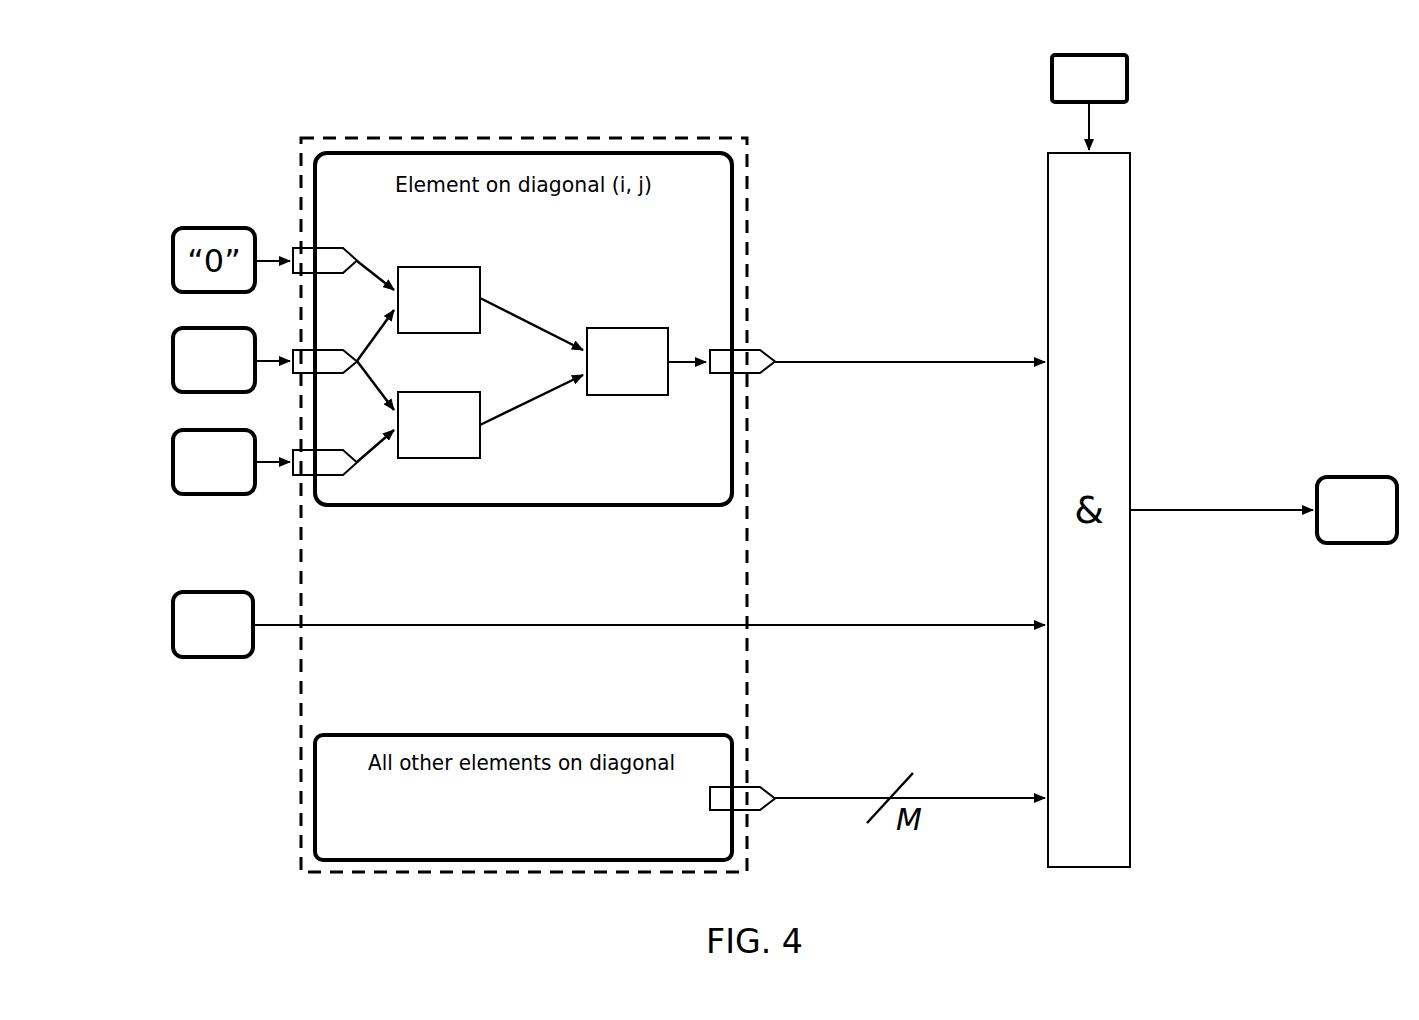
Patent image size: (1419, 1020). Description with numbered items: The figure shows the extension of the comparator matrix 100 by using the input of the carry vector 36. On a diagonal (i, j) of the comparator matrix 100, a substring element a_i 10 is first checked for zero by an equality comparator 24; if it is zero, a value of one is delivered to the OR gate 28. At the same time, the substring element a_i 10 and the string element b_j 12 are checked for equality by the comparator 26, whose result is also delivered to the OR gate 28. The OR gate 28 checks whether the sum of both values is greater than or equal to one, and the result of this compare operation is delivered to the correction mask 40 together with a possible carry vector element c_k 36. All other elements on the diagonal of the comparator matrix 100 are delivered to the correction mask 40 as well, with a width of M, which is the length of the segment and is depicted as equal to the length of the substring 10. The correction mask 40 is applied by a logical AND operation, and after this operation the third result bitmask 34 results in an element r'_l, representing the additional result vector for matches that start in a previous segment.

The comparator matrix 100 is at (372, 118).
The substring element 10 is at (165, 362).
The string element 12 is at (165, 462).
The equality comparator 24 is at (481, 270).
The comparator 26 is at (481, 455).
The OR gate 28 is at (606, 327).
The third result bitmask 34 is at (1362, 468).
The carry vector 36 is at (165, 628).
The correction mask 40 is at (1050, 77).